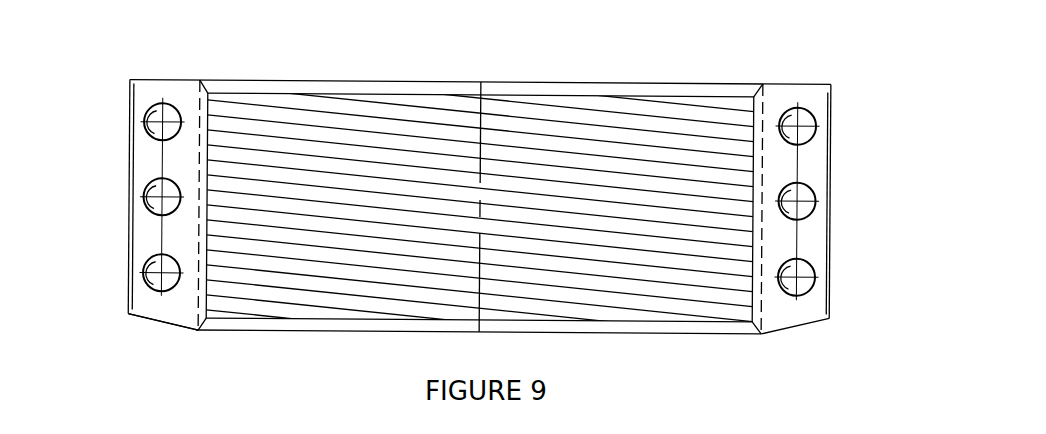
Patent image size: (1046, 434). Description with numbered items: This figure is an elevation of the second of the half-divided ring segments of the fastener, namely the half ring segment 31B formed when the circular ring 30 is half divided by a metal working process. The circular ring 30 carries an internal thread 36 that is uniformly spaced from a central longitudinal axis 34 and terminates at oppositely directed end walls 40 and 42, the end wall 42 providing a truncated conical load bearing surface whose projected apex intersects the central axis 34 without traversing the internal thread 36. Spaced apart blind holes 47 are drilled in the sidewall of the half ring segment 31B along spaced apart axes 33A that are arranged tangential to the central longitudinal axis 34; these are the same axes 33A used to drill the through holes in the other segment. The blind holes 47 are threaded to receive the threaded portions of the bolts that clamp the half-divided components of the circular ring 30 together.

The circular ring 30 is at (652, 70).
The half ring segment 31B is at (831, 187).
The spaced apart axes 33A is at (150, 130).
The central longitudinal axis 34 is at (482, 148).
The internal thread 36 is at (363, 113).
The end wall 40 is at (157, 82).
The end wall 42 is at (160, 323).
The blind holes 47 is at (148, 122).